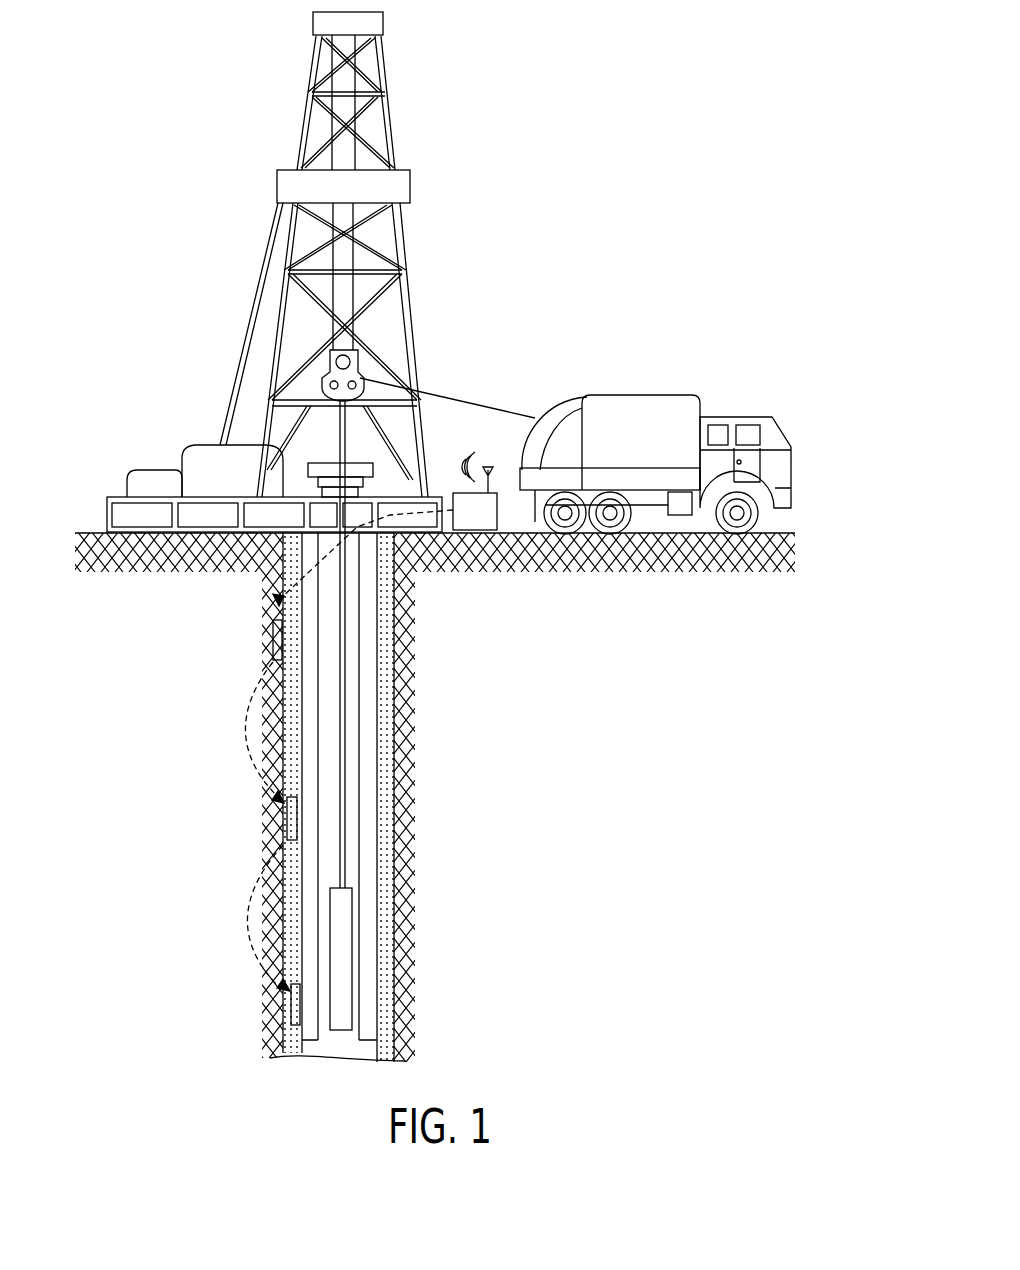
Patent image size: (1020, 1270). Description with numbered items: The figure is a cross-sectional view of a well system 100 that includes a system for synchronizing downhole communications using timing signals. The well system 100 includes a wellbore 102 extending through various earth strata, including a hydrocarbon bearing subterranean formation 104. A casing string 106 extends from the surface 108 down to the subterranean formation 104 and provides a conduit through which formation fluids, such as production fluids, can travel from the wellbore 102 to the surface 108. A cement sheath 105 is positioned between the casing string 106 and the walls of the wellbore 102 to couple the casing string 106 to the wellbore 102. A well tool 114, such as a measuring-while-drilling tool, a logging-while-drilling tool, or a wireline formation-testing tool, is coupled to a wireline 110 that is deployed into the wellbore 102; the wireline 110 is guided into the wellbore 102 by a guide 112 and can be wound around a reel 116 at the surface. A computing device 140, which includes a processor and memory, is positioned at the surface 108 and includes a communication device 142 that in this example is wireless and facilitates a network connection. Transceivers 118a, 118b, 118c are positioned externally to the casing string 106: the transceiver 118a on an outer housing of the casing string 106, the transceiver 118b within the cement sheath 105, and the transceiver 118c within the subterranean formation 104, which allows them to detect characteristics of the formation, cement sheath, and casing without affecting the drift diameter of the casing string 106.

The well system 100 is at (632, 136).
The wellbore 102 is at (398, 756).
The subterranean formation 104 is at (414, 672).
The cement sheath 105 is at (383, 801).
The casing string 106 is at (367, 729).
The surface 108 is at (375, 463).
The wireline 110 is at (455, 398).
The guide 112 is at (352, 358).
The well tool 114 is at (352, 905).
The reel 116 is at (565, 412).
The transceiver 118a is at (292, 1003).
The transceiver 118b is at (287, 822).
The transceiver 118c is at (278, 640).
The computing device 140 is at (490, 527).
The communication device 142 is at (490, 468).